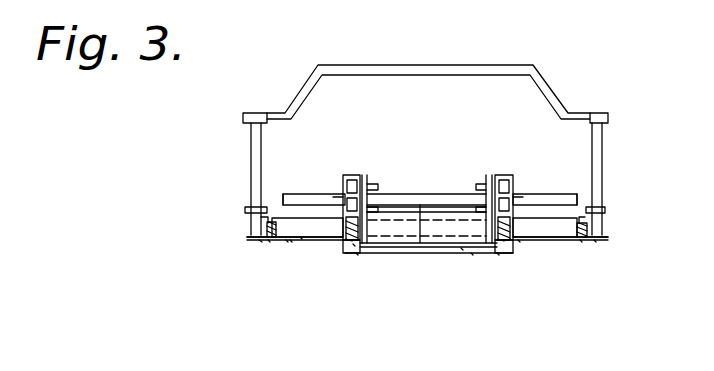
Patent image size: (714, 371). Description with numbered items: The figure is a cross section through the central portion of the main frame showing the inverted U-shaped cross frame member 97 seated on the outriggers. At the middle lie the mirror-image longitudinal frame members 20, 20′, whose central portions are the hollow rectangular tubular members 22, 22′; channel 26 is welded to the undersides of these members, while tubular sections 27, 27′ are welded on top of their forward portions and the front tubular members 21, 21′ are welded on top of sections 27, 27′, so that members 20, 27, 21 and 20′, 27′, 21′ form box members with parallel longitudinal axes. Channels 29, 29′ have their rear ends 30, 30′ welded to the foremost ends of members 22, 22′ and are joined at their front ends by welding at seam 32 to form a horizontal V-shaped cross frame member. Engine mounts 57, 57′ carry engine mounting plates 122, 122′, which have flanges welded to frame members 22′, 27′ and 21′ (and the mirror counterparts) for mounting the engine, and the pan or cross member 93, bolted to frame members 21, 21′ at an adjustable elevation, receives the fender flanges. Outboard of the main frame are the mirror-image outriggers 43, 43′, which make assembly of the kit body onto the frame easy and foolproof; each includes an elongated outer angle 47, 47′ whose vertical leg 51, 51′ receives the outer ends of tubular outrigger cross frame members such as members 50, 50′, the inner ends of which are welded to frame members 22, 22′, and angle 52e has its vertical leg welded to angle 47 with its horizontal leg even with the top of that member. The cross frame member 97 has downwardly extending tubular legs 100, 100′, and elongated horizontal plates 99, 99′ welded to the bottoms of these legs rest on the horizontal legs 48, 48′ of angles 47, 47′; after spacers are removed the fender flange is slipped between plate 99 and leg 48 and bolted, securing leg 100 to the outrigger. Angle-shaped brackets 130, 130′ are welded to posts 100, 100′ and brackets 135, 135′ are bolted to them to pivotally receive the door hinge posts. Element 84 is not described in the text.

The inverted U-shaped cross frame member 97 is at (455, 65).
The leg 100 is at (602, 143).
The leg 100′ is at (251, 130).
The bracket 135 is at (608, 114).
The bracket 135′ is at (250, 113).
The bracket 130 is at (606, 207).
The bracket 130′ is at (252, 206).
The channel 26 is at (417, 253).
The longitudinal frame member 20 is at (543, 237).
The longitudinal frame member 20′ is at (322, 240).
The horizontal leg 48 is at (600, 240).
The horizontal leg 48′ is at (250, 237).
The horizontal plate 99 is at (600, 230).
The horizontal plate 99′ is at (248, 218).
The outer angle 47 is at (597, 243).
The outer angle 47′ is at (254, 242).
The outrigger 43 is at (587, 243).
The outrigger 43′ is at (267, 243).
The vertical leg 51 is at (573, 243).
The vertical leg 51′ is at (273, 245).
The outrigger cross frame member 50 is at (522, 238).
The outrigger cross frame member 50′ is at (284, 244).
The member 84 is at (295, 238).
The tubular member 22 is at (498, 253).
The tubular member 22′ is at (330, 245).
The rear end 30 is at (473, 256).
The rear end 30′ is at (358, 272).
The channel 29 is at (463, 250).
The channel 29′ is at (355, 244).
The seam 32 is at (447, 194).
The pan or cross member 93 is at (416, 194).
The tubular member 21 is at (510, 175).
The tubular member 21′ is at (350, 175).
The engine mount 57 is at (495, 175).
The engine mount 57′ is at (358, 175).
The engine mounting plate 122 is at (487, 175).
The engine mounting plate 122′ is at (367, 175).
The tubular section 27 is at (533, 194).
The tubular section 27′ is at (330, 199).
The angle 52e is at (283, 195).